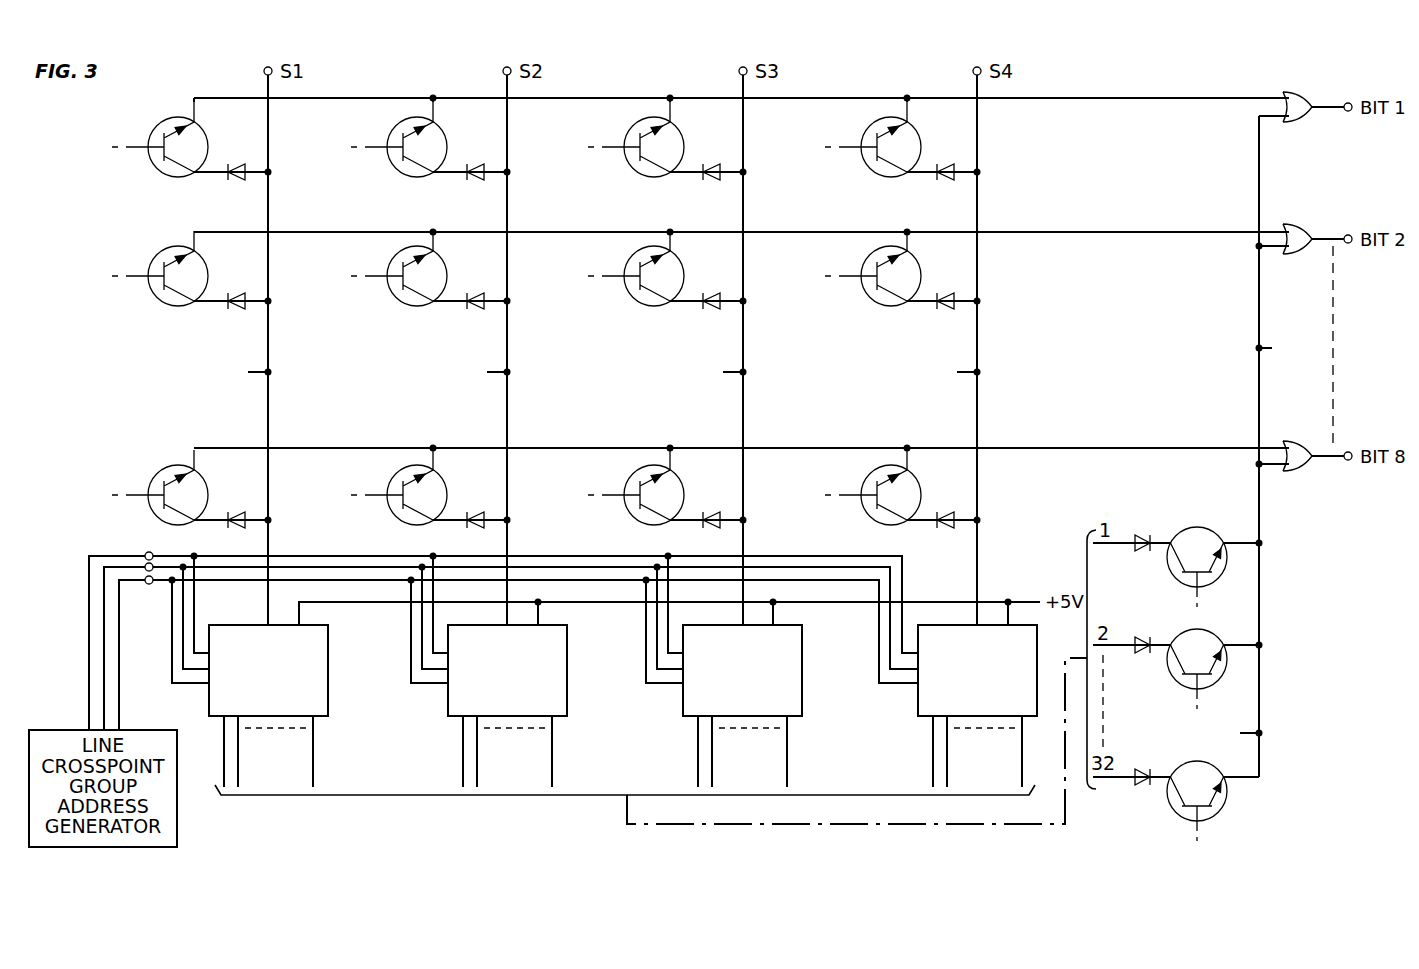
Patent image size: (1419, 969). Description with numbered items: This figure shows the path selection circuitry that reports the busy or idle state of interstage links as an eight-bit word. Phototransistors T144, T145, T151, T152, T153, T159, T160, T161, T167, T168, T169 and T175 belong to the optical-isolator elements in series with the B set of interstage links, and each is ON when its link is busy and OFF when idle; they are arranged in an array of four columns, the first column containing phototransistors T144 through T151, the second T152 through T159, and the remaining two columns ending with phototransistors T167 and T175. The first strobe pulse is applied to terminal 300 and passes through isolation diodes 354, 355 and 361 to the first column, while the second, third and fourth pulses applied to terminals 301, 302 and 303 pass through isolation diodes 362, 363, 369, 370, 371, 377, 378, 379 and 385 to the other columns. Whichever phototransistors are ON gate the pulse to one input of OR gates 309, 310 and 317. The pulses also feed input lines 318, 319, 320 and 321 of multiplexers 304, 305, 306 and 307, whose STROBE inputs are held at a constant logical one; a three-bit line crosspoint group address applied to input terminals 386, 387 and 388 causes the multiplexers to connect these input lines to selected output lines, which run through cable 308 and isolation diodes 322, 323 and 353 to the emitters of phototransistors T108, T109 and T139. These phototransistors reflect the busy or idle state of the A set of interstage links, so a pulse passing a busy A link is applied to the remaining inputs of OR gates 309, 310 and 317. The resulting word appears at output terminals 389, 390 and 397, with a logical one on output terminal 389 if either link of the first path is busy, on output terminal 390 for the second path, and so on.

The terminal 300 is at (264, 71).
The terminal 301 is at (503, 71).
The terminal 302 is at (739, 71).
The terminal 303 is at (973, 71).
The multiplexer 304 is at (209, 703).
The multiplexer 305 is at (448, 703).
The multiplexer 306 is at (683, 703).
The multiplexer 307 is at (918, 703).
The cable 308 is at (855, 828).
The OR gate 309 is at (1313, 70).
The OR gate 310 is at (1315, 203).
The OR gate 317 is at (1315, 420).
The input line 318 is at (268, 409).
The input line 319 is at (507, 409).
The input line 320 is at (743, 409).
The input line 321 is at (977, 409).
The isolation diode 322 is at (1142, 534).
The isolation diode 323 is at (1142, 636).
The isolation diode 353 is at (1142, 768).
The isolation diode 354 is at (230, 181).
The isolation diode 355 is at (230, 310).
The isolation diode 361 is at (230, 529).
The isolation diode 362 is at (469, 181).
The isolation diode 363 is at (469, 310).
The isolation diode 369 is at (469, 529).
The isolation diode 370 is at (705, 181).
The isolation diode 371 is at (705, 310).
The isolation diode 377 is at (705, 529).
The isolation diode 378 is at (939, 181).
The isolation diode 379 is at (939, 310).
The isolation diode 385 is at (939, 529).
The input terminal 386 is at (153, 562).
The input terminal 387 is at (145, 553).
The input terminal 388 is at (147, 584).
The output terminal 389 is at (1349, 112).
The output terminal 390 is at (1349, 244).
The output terminal 397 is at (1349, 461).
The phototransistor T144 is at (162, 122).
The phototransistor T145 is at (162, 251).
The phototransistor T151 is at (162, 470).
The phototransistor T152 is at (401, 122).
The phototransistor T153 is at (401, 251).
The phototransistor T159 is at (401, 470).
The phototransistor T160 is at (638, 122).
The phototransistor T161 is at (638, 251).
The phototransistor T167 is at (638, 470).
The phototransistor T168 is at (875, 122).
The phototransistor T169 is at (875, 251).
The phototransistor T175 is at (875, 470).
The phototransistor T108 is at (1177, 579).
The phototransistor T109 is at (1177, 681).
The phototransistor T139 is at (1177, 813).